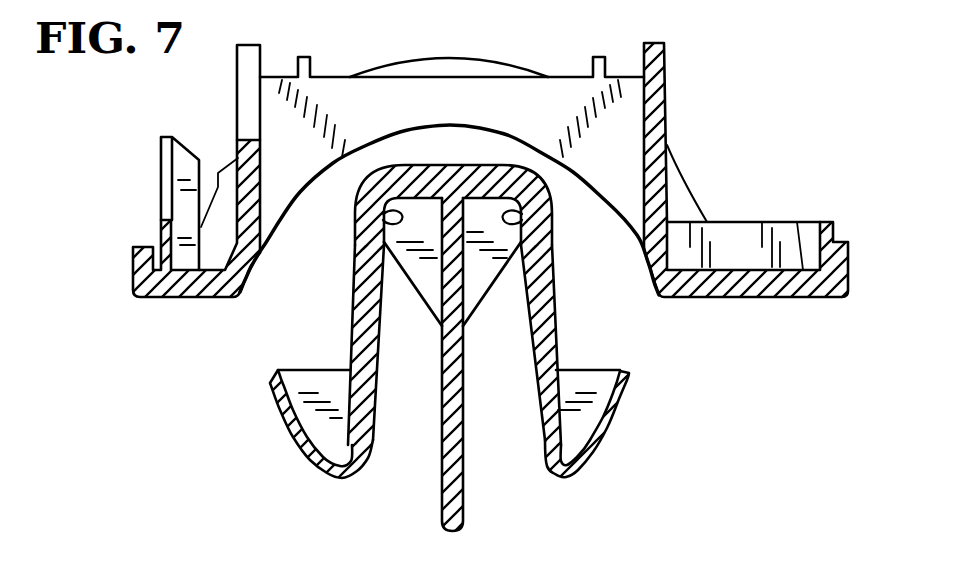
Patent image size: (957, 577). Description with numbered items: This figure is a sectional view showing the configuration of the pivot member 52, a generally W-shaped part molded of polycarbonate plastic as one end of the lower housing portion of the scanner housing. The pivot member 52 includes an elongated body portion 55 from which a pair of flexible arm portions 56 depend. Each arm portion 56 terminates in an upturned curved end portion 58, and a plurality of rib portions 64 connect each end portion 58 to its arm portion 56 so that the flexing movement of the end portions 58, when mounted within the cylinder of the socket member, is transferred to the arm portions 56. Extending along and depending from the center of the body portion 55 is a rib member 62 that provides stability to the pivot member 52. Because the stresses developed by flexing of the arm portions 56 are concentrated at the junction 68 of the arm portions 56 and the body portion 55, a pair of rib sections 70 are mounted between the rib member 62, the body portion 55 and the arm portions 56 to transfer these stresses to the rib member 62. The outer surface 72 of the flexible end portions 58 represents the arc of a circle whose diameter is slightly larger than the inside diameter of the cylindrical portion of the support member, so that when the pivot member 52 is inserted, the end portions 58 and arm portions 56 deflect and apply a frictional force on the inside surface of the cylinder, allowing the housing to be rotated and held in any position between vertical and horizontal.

The pivot member 52 is at (485, 167).
The elongated body portion 55 is at (404, 165).
The arm portions 56 is at (352, 283).
The end portions 58 is at (322, 475).
The rib member 62 is at (442, 495).
The rib portions 64 is at (322, 427).
The junction 68 is at (382, 221).
The rib sections 70 is at (420, 294).
The outer surface 72 is at (273, 392).